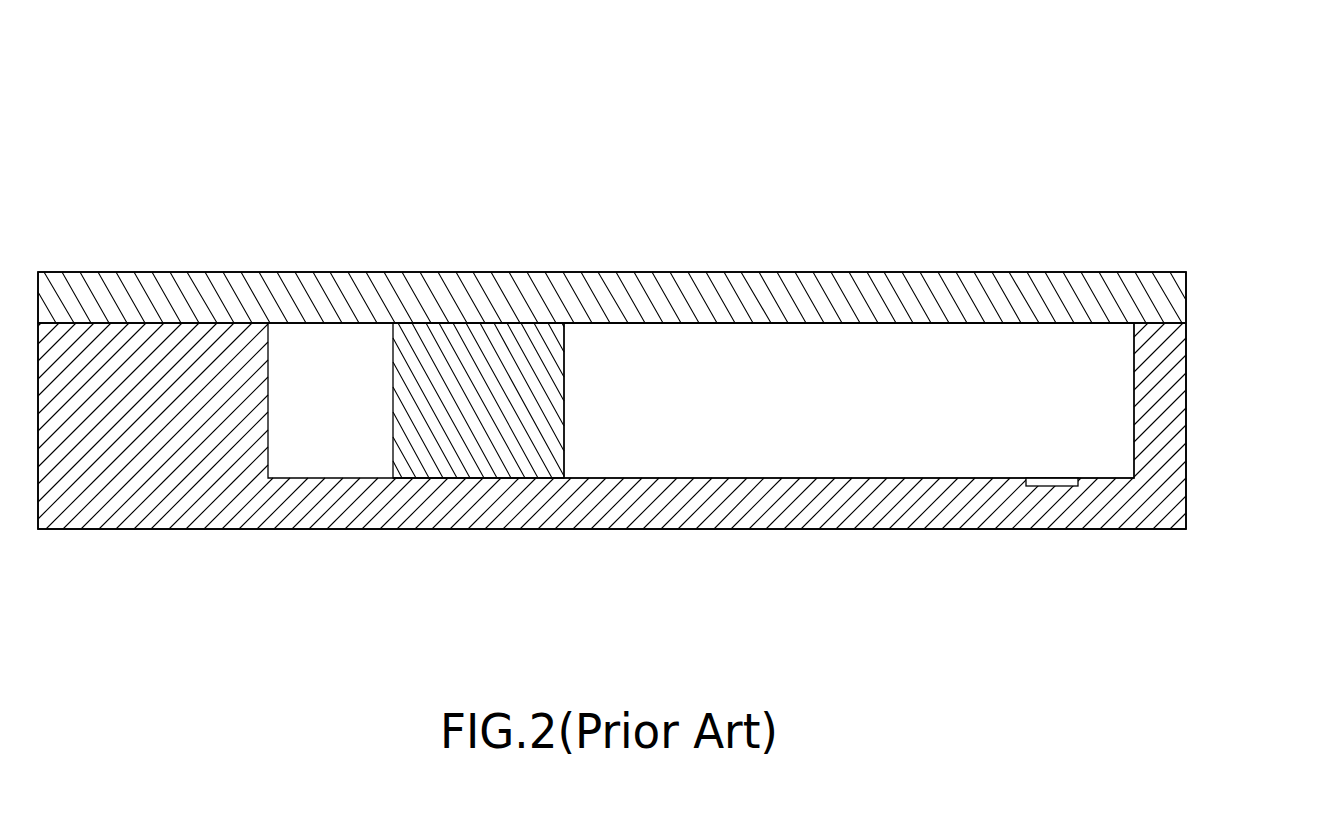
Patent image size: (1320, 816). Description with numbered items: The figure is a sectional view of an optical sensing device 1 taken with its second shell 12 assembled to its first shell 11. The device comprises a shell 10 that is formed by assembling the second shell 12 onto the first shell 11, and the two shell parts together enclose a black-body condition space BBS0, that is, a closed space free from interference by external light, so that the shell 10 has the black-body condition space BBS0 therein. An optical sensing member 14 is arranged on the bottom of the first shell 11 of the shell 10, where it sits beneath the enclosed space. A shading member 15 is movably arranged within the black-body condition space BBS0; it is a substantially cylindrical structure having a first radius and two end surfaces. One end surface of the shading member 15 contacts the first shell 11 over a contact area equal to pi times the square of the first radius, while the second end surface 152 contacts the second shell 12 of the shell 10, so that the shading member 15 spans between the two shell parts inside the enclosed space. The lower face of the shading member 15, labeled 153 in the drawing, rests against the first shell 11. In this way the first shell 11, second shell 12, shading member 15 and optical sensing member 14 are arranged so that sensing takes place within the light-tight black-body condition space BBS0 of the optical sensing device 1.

The optical sensing device 1 is at (1118, 140).
The shell 10 is at (1221, 256).
The first shell 11 is at (1186, 343).
The second shell 12 is at (207, 290).
The optical sensing member 14 is at (1052, 483).
The shading member 15 is at (428, 388).
The second end surface 152 is at (502, 325).
The bottom surface of block 153 is at (497, 478).
The black-body condition space BBS0 is at (828, 372).